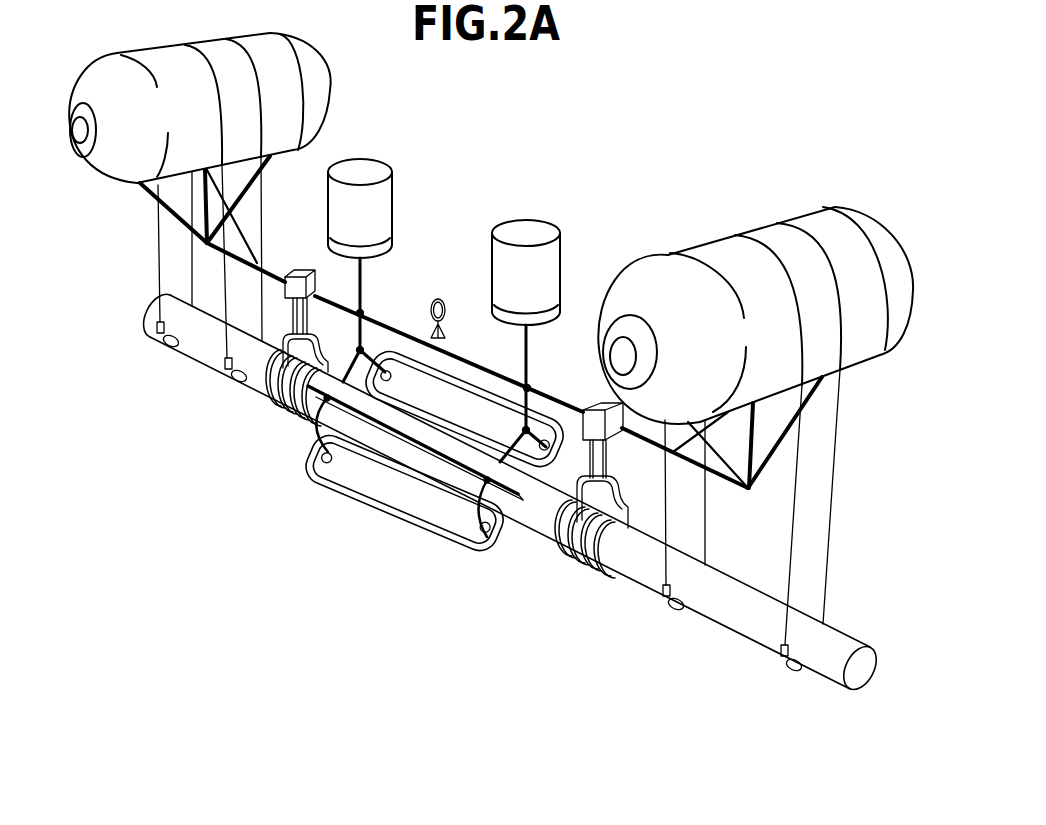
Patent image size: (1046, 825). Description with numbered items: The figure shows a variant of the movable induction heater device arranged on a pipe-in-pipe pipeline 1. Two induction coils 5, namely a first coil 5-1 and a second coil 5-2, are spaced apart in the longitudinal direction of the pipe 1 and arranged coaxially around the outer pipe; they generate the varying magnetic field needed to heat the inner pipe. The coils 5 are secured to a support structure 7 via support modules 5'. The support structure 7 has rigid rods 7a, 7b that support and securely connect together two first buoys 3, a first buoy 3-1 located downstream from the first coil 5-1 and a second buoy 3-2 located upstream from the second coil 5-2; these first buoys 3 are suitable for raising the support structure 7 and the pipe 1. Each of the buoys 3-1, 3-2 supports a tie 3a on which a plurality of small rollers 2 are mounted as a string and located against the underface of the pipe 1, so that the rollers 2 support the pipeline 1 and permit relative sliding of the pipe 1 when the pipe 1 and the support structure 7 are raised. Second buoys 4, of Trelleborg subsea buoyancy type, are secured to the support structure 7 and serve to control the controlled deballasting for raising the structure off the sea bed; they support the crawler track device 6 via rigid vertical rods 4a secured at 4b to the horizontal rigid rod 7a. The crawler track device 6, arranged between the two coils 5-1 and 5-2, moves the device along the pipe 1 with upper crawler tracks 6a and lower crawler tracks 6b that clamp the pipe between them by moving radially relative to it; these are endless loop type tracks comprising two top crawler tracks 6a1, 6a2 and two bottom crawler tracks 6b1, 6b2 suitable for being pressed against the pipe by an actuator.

The pipe 1 is at (832, 647).
The rollers 2 is at (236, 374).
The first buoys 3 is at (491, 228).
The first buoy 3-1 is at (122, 122).
The first buoy 3-2 is at (699, 342).
The tie 3a is at (158, 243).
The second buoys 4 is at (352, 226).
The rigid vertical rods 4a is at (522, 342).
The securing point 4b is at (362, 310).
The induction coils 5 is at (396, 485).
The first induction coil 5-1 is at (272, 390).
The second induction coil 5-2 is at (588, 553).
The support modules 5' is at (455, 378).
The crawler track device 6 is at (406, 528).
The upper crawler tracks 6a is at (414, 476).
The top crawler track 6a1 is at (433, 440).
The top crawler track 6a2 is at (427, 402).
The lower crawler tracks 6b is at (419, 558).
The bottom crawler track 6b1 is at (438, 560).
The bottom crawler track 6b2 is at (538, 552).
The support structure 7 is at (536, 342).
The horizontal rigid rod 7a is at (722, 480).
The rigid rod 7b is at (753, 447).